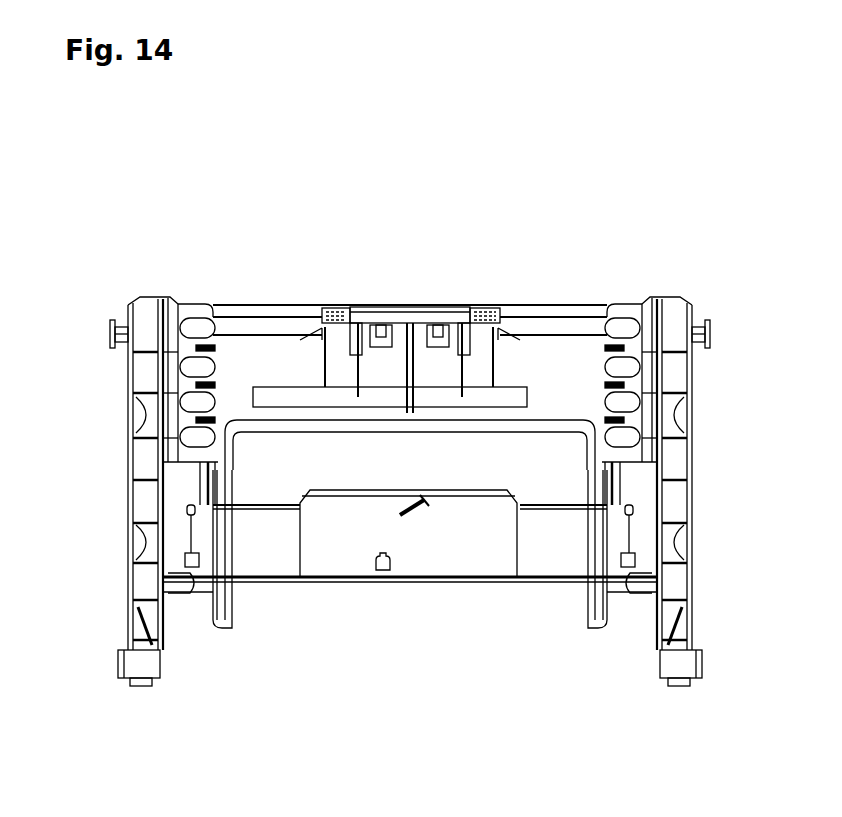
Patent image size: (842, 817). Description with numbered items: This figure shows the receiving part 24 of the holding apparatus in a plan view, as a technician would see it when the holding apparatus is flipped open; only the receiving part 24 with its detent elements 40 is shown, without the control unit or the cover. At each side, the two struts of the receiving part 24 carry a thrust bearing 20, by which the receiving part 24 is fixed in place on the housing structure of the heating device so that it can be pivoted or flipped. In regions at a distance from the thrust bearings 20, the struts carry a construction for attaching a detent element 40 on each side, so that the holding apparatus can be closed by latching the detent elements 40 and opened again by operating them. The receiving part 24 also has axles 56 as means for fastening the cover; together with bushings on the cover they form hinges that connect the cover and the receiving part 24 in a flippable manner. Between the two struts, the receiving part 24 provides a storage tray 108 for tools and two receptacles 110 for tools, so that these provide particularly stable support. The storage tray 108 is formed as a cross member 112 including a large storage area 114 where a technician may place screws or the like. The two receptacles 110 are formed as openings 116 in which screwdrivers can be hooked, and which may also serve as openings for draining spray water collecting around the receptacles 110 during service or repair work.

The thrust bearing 20 is at (112, 335).
The receiving part 24 is at (550, 360).
The detent element 40 is at (118, 665).
The axle 56 is at (340, 307).
The storage tray for tools 108 is at (451, 601).
The receptacle for tools 110 is at (410, 597).
The cross member 112 is at (484, 568).
The storage area 114 is at (340, 554).
The opening 116 is at (190, 580).